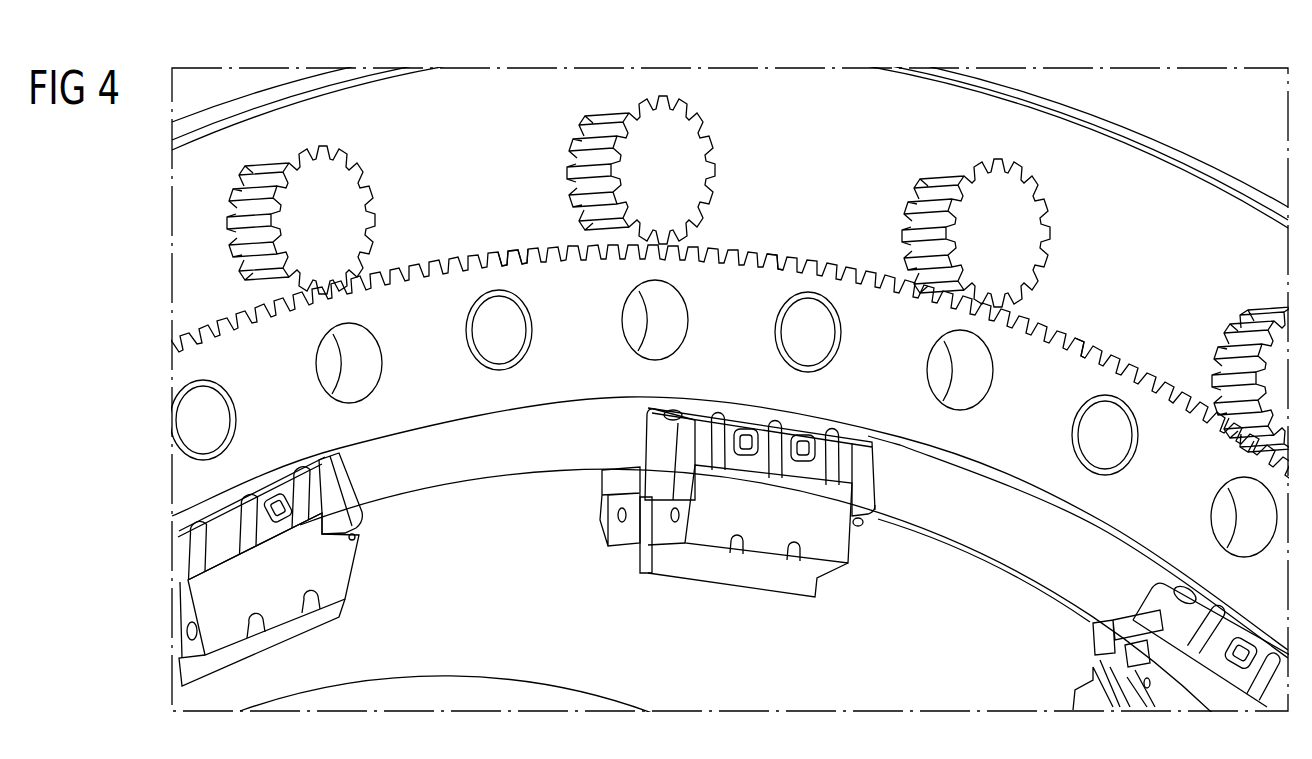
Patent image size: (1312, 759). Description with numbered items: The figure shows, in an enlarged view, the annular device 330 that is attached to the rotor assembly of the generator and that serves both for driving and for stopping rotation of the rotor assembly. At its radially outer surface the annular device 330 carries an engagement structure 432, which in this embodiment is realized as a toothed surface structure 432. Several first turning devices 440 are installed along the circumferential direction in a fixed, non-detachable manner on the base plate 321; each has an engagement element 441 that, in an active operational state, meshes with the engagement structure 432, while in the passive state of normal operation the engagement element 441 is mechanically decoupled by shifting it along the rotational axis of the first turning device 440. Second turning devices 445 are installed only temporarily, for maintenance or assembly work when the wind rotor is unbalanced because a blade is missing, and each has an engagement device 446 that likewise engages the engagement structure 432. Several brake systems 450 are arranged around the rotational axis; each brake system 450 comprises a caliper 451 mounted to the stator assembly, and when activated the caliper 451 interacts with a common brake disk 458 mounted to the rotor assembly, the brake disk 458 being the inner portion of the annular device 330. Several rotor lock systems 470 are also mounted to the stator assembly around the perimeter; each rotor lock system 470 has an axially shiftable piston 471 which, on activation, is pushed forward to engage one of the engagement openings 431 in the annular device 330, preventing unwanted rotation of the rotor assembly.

The base plate 321 is at (1070, 151).
The annular device 330 is at (436, 286).
The engagement structure 432 is at (504, 246).
The engagement opening 431 is at (667, 320).
The axially shiftable piston 471 is at (508, 335).
The rotor lock system 470 is at (775, 278).
The first turning device 440 is at (769, 269).
The engagement element 441 is at (345, 202).
The second turning device 445 is at (686, 161).
The engagement device 446 is at (690, 177).
The brake disk 458 is at (484, 468).
The brake system 450 is at (734, 559).
The caliper 451 is at (353, 537).